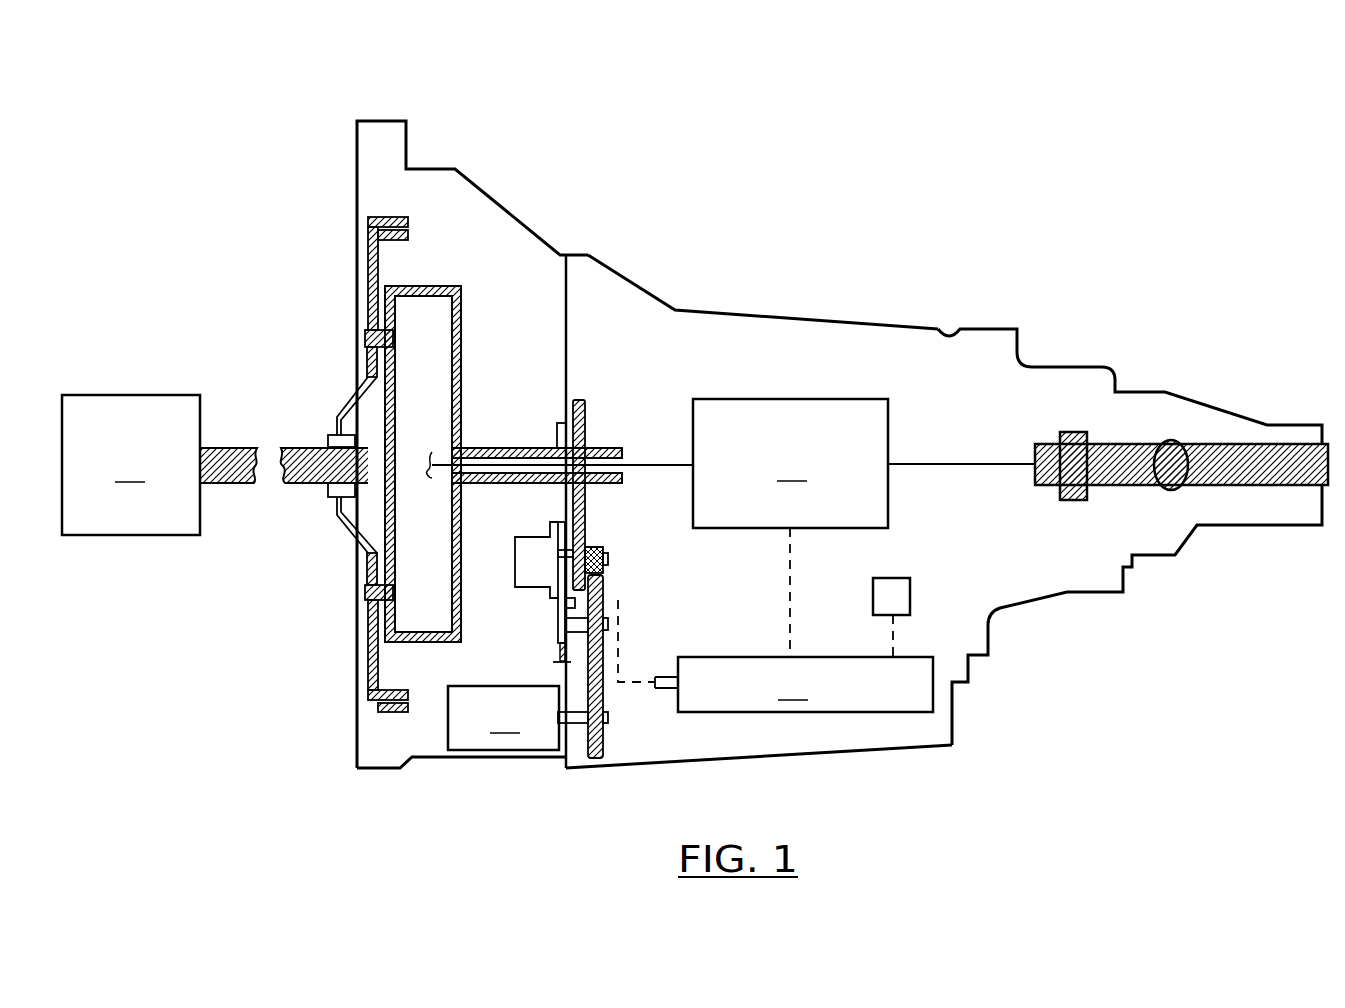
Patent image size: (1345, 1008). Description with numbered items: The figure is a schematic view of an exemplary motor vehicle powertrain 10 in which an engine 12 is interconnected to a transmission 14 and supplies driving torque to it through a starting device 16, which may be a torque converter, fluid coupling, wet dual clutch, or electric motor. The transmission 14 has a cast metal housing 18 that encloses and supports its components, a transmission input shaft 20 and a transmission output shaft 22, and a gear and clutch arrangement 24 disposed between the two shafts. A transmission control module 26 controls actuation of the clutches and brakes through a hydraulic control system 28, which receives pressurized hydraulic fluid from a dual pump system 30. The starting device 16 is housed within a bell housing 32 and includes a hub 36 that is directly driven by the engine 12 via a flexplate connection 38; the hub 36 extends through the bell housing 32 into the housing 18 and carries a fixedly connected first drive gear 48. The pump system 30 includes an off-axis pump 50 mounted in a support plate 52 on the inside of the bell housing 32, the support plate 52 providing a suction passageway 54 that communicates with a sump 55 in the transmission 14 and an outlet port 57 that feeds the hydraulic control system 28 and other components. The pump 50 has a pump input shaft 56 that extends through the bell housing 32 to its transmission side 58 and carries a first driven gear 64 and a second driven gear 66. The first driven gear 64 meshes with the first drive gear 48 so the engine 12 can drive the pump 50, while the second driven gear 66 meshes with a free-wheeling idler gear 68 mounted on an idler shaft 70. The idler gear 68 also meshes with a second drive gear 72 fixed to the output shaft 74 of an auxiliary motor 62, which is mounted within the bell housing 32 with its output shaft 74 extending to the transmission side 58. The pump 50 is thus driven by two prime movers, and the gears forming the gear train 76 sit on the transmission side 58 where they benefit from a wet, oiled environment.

The powertrain 10 is at (1048, 148).
The engine 12 is at (215, 465).
The transmission 14 is at (930, 317).
The starting device 16 is at (448, 262).
The housing 18 is at (728, 311).
The transmission input shaft 20 is at (650, 462).
The transmission output shaft 22 is at (1125, 443).
The gear and clutch arrangement 24 is at (864, 528).
The transmission control module 26 is at (911, 597).
The hydraulic control system 28 is at (805, 684).
The dual pump system 30 is at (645, 582).
The bell housing 32 is at (442, 168).
The hub 36 is at (462, 322).
The flexplate connection 38 is at (350, 400).
The first drive gear 48 is at (580, 400).
The off-axis pump 50 is at (535, 537).
The support plate 52 is at (555, 437).
The suction passageway 54 is at (556, 652).
The sump 55 is at (832, 750).
The pump input shaft 56 is at (609, 558).
The outlet port 57 is at (565, 603).
The transmission side 58 is at (574, 304).
The auxiliary motor 62 is at (503, 718).
The first driven gear 64 is at (577, 567).
The second driven gear 66 is at (604, 544).
The idler gear 68 is at (604, 660).
The idler shaft 70 is at (609, 626).
The second drive gear 72 is at (606, 742).
The output shaft 74 is at (609, 719).
The gear train 76 is at (594, 778).